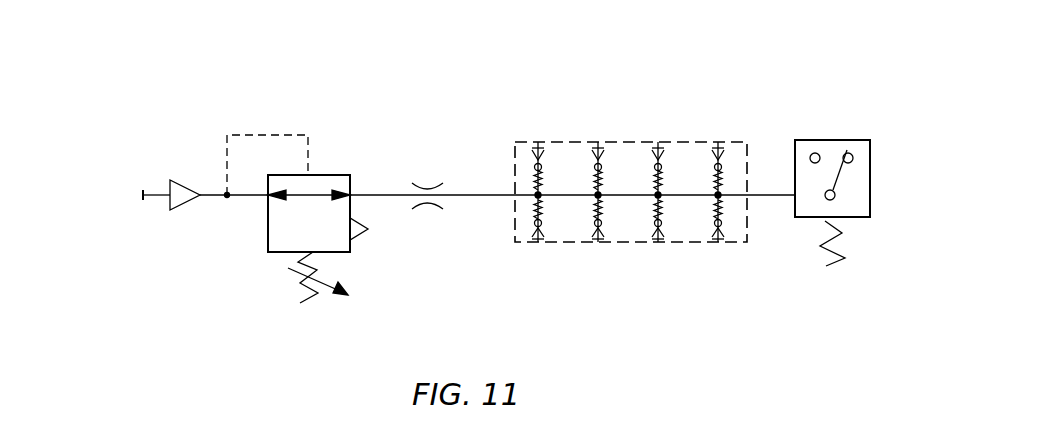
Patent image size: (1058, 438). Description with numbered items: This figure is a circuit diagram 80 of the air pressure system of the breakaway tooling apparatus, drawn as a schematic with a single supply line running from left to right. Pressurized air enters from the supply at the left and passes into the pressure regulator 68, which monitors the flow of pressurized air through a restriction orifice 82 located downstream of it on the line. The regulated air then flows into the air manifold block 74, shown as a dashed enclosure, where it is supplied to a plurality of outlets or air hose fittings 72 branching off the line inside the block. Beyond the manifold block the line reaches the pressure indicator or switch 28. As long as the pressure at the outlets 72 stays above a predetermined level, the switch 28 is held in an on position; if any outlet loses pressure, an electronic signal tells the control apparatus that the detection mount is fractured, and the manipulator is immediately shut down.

The pressure regulator 68 is at (312, 175).
The restriction orifice 82 is at (432, 203).
The circuit diagram 80 is at (530, 94).
The outlets or air hose fittings 72 is at (538, 142).
The air manifold block 74 is at (632, 142).
The pressure indicator or switch 28 is at (812, 217).